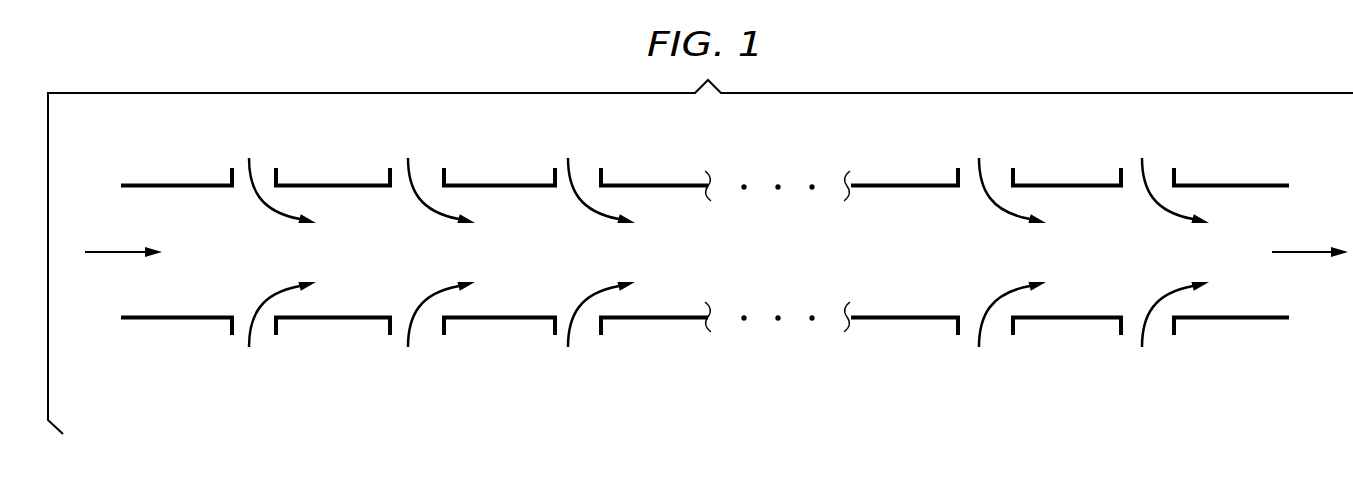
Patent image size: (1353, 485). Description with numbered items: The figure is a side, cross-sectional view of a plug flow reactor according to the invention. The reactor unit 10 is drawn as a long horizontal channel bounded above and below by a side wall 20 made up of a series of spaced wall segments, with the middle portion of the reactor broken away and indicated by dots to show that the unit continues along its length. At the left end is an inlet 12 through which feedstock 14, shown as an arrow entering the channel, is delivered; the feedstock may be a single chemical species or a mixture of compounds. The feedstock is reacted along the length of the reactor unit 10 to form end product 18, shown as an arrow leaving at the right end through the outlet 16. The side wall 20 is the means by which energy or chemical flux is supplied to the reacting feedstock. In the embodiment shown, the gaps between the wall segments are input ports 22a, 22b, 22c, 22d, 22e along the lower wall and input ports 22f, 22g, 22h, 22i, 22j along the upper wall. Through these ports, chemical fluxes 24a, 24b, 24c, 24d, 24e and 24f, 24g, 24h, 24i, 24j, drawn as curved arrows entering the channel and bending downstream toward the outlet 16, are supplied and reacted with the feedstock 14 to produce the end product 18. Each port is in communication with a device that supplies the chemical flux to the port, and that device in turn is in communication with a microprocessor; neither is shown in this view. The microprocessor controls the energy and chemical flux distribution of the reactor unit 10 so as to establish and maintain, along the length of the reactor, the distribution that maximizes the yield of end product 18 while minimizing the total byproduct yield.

The reactor unit 10 is at (666, 183).
The inlet 12 is at (137, 220).
The feedstock 14 is at (105, 255).
The outlet 16 is at (1293, 220).
The end product 18 is at (1317, 255).
The side wall 20 is at (505, 320).
The input port 22a is at (258, 325).
The input port 22b is at (417, 325).
The input port 22c is at (577, 325).
The input port 22d is at (988, 325).
The input port 22e is at (1151, 325).
The input port 22f is at (1151, 175).
The input port 22g is at (988, 175).
The input port 22h is at (577, 175).
The input port 22i is at (417, 175).
The input port 22j is at (258, 175).
The chemical flux 24a is at (271, 298).
The chemical flux 24b is at (430, 298).
The chemical flux 24c is at (590, 298).
The chemical flux 24d is at (1001, 298).
The chemical flux 24e is at (1164, 298).
The chemical flux 24f is at (1149, 197).
The chemical flux 24g is at (986, 197).
The chemical flux 24h is at (575, 197).
The chemical flux 24i is at (415, 197).
The chemical flux 24j is at (256, 197).